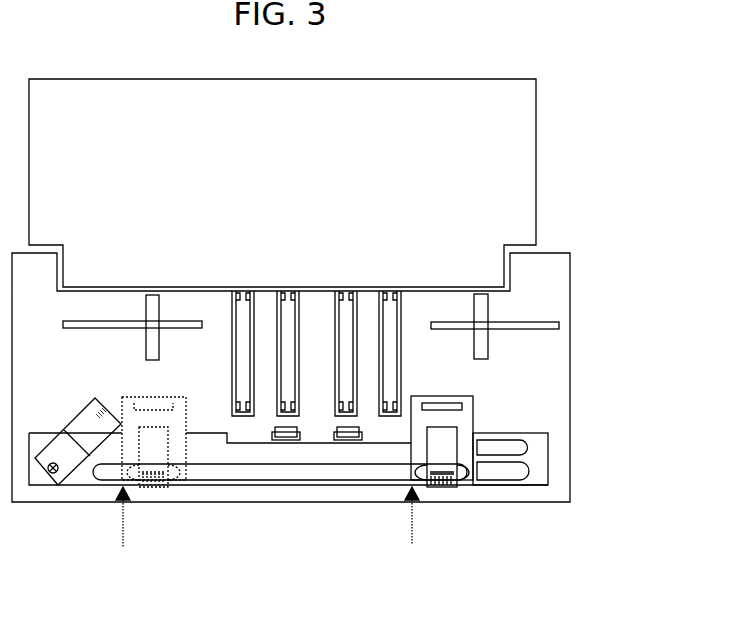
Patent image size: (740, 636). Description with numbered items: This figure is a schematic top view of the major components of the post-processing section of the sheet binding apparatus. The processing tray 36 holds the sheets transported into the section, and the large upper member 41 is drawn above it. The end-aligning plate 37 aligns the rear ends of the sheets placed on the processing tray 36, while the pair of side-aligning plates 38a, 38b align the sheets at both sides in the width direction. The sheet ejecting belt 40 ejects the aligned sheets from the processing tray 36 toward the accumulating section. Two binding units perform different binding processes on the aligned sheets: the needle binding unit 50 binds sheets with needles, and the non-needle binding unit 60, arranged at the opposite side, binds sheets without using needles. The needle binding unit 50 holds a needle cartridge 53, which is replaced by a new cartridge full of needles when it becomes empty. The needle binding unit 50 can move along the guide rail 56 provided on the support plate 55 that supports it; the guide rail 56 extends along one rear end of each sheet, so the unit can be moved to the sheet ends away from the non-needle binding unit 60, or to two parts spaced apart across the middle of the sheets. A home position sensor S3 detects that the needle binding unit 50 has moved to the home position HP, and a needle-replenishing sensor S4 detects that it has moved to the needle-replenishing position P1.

The upper unit / cover 41 is at (497, 88).
The processing tray 36 is at (557, 284).
The sheet ejecting belt 40 is at (382, 292).
The side-aligning plate 38a is at (152, 349).
The side-aligning plate 38b is at (483, 333).
The needle binding unit 50 is at (185, 397).
The needle cartridge 53 is at (450, 443).
The support plate 55 is at (538, 477).
The guide rail 56 is at (360, 473).
The end-aligning plate 37 is at (343, 441).
The non-needle binding unit 60 is at (68, 463).
The needle-replenishing sensor S4 is at (130, 500).
The home position sensor S3 is at (418, 500).
The needle-replenishing position P1 is at (122, 532).
The home position HP is at (412, 531).